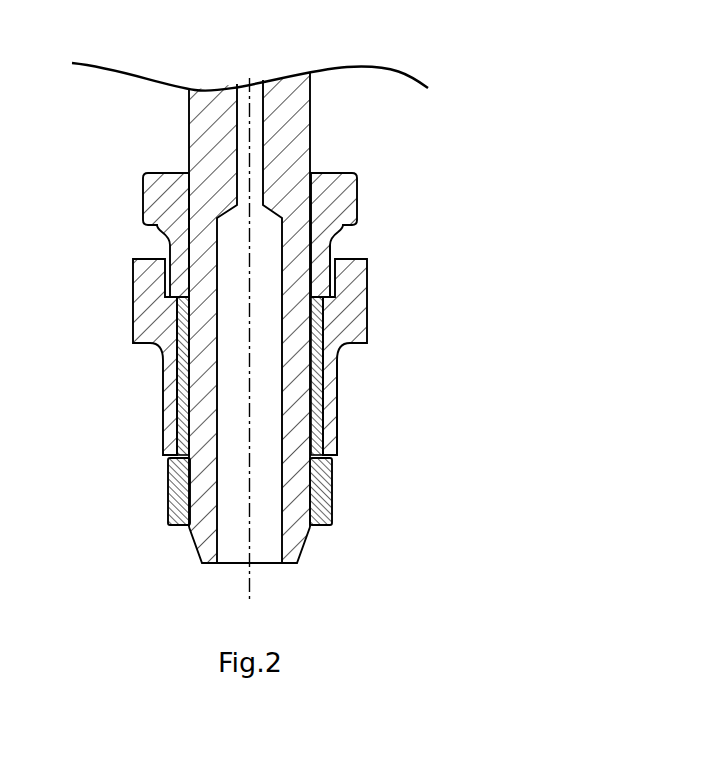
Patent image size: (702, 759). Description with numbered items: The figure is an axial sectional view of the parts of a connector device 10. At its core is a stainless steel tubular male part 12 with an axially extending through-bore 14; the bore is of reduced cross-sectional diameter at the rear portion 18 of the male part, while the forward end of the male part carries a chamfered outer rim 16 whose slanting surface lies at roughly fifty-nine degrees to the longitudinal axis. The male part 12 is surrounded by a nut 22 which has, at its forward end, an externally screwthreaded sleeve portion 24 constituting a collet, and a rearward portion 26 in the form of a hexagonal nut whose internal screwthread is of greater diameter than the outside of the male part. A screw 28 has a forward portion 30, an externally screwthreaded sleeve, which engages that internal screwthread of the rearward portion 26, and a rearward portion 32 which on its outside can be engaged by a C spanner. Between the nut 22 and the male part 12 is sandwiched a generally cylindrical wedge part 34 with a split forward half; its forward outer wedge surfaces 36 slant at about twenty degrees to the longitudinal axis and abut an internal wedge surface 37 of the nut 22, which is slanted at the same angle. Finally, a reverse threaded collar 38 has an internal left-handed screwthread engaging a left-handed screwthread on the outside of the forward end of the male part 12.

The connector device 10 is at (466, 151).
The tubular male part 12 is at (292, 112).
The through-bore 14 is at (272, 403).
The chamfered outer rim 16 is at (298, 553).
The rear portion 18 is at (213, 135).
The nut 22 is at (140, 303).
The externally screwthreaded sleeve portion 24 is at (168, 402).
The rearward portion 26 is at (348, 303).
The screw 28 is at (158, 193).
The forward portion 30 is at (333, 248).
The rearward portion 32 is at (347, 187).
The wedge part 34 is at (333, 365).
The forward outer wedge surfaces 36 is at (313, 430).
The internal wedge surface 37 is at (165, 420).
The reverse threaded collar 38 is at (327, 503).